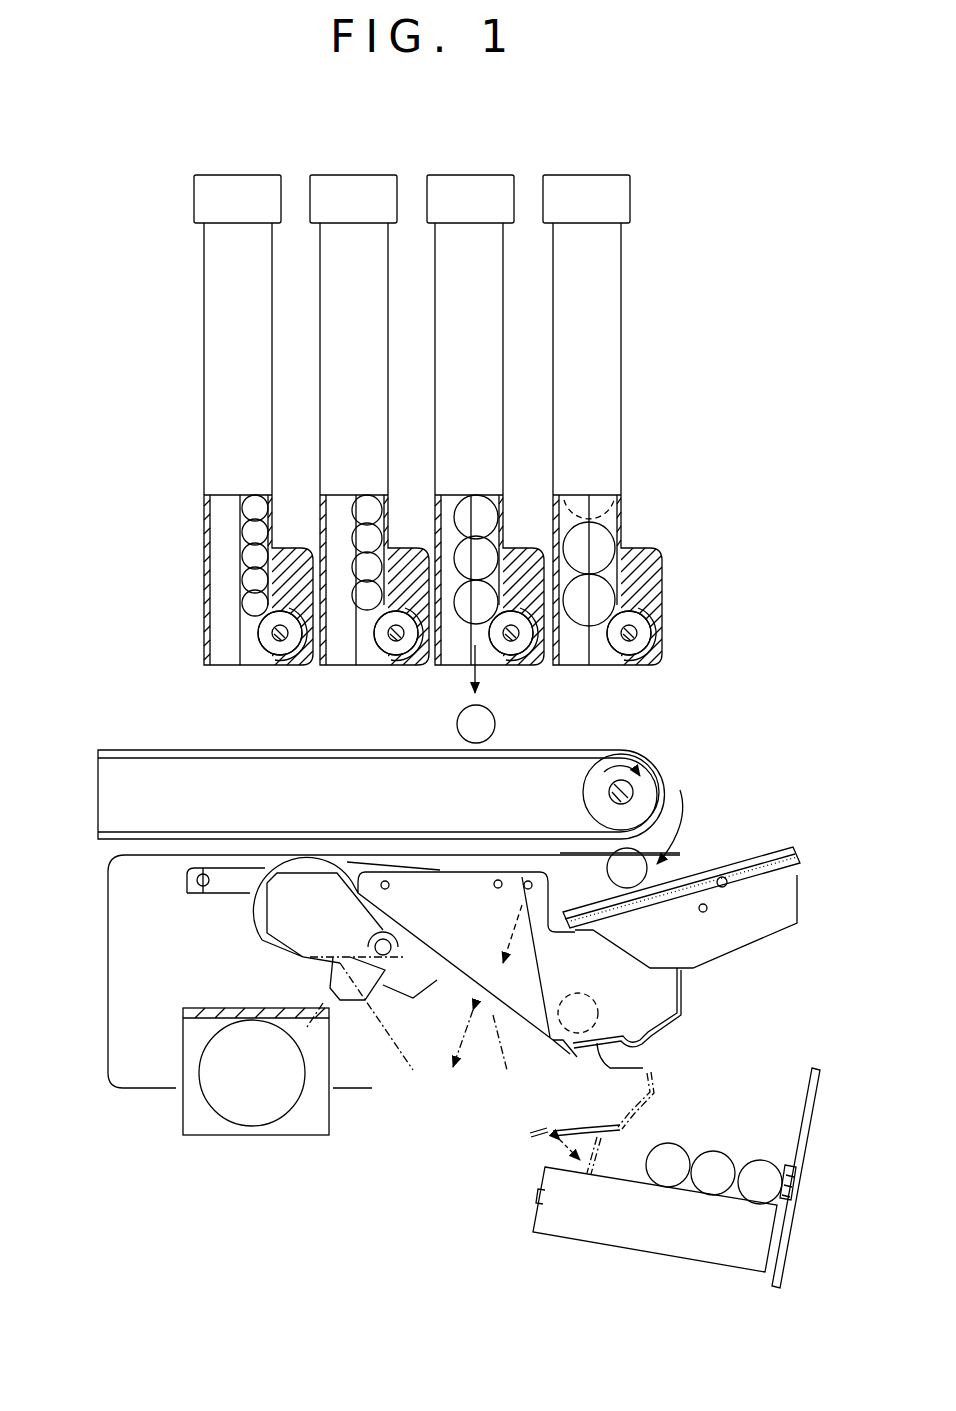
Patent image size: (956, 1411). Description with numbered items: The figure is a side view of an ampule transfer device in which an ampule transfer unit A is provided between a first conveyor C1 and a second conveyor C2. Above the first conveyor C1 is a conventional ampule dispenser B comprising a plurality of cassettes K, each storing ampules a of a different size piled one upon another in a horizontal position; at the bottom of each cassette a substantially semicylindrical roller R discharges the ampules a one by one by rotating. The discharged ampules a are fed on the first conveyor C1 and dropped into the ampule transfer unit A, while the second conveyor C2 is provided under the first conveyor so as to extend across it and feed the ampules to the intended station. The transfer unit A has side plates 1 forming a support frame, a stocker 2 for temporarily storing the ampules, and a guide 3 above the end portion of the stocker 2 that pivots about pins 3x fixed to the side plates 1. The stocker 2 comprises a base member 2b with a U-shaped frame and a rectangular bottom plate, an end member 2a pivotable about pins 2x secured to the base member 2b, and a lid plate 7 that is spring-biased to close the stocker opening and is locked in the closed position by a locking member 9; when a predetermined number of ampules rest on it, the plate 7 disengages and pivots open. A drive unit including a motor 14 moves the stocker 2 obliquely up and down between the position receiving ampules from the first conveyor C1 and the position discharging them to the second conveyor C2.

The ampule dispenser B is at (160, 218).
The cassettes K is at (218, 347).
The roller R is at (390, 648).
The ampules a is at (455, 721).
The first conveyor C1 is at (162, 747).
The ampule transfer unit A is at (780, 805).
The side plates 1 is at (125, 950).
The motor 14 is at (260, 1126).
The stocker 2 is at (690, 1020).
The end member 2a is at (683, 975).
The base member 2b is at (445, 885).
The pins 2x is at (528, 880).
The guide 3 is at (810, 850).
The pins 3x is at (727, 887).
The lid plate 7 is at (650, 1068).
The locking member 9 is at (561, 1060).
The second conveyor C2 is at (640, 1258).